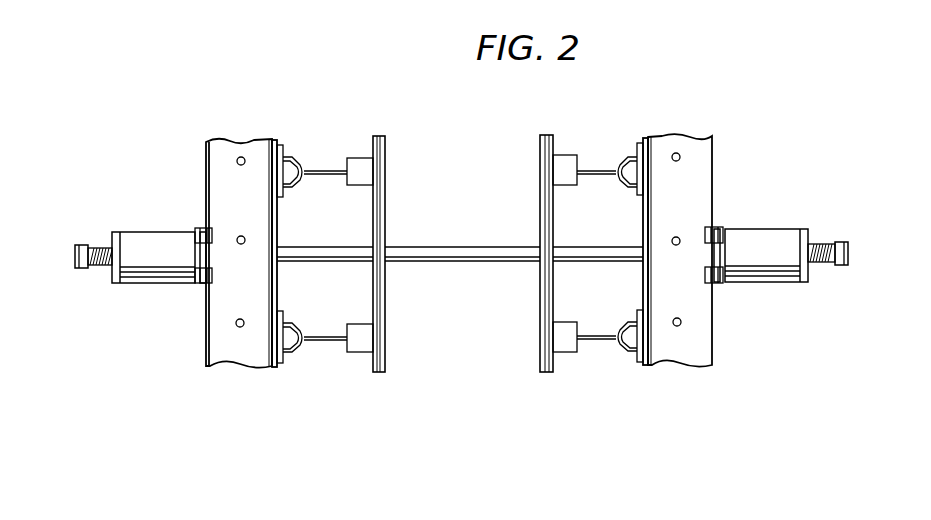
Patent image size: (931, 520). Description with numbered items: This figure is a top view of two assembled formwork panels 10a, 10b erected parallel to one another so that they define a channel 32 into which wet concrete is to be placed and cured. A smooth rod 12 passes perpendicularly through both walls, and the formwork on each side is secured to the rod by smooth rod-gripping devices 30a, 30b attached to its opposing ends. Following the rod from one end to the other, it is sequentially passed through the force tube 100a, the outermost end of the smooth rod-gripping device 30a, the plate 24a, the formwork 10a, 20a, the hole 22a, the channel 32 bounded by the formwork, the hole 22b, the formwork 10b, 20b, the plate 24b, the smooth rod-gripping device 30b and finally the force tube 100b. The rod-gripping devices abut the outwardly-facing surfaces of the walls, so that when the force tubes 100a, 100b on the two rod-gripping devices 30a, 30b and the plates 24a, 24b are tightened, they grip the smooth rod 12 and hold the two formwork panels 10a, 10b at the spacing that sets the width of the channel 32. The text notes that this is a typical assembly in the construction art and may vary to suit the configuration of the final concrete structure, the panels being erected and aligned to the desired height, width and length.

The formwork panel 10a is at (387, 142).
The formwork panel 10b is at (540, 142).
The rod 12 is at (462, 264).
The formwork 20a is at (248, 376).
The formwork 20b is at (692, 371).
The hole 22a is at (387, 247).
The hole 22b is at (542, 247).
The plate 24a is at (198, 289).
The plate 24b is at (720, 290).
The smooth rod-gripping device 30a is at (168, 224).
The smooth rod-gripping device 30b is at (753, 221).
The channel 32 is at (483, 355).
The force tube 100a is at (98, 247).
The force tube 100b is at (825, 242).